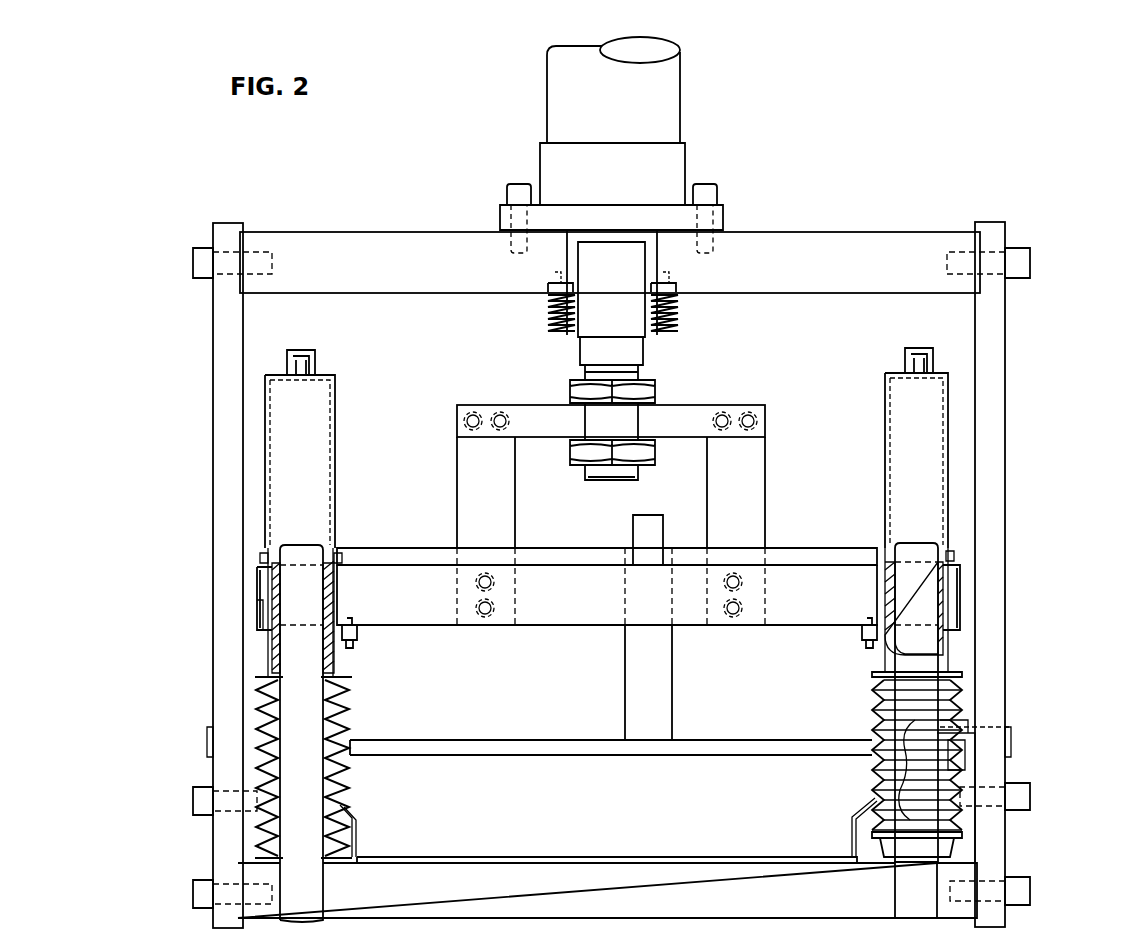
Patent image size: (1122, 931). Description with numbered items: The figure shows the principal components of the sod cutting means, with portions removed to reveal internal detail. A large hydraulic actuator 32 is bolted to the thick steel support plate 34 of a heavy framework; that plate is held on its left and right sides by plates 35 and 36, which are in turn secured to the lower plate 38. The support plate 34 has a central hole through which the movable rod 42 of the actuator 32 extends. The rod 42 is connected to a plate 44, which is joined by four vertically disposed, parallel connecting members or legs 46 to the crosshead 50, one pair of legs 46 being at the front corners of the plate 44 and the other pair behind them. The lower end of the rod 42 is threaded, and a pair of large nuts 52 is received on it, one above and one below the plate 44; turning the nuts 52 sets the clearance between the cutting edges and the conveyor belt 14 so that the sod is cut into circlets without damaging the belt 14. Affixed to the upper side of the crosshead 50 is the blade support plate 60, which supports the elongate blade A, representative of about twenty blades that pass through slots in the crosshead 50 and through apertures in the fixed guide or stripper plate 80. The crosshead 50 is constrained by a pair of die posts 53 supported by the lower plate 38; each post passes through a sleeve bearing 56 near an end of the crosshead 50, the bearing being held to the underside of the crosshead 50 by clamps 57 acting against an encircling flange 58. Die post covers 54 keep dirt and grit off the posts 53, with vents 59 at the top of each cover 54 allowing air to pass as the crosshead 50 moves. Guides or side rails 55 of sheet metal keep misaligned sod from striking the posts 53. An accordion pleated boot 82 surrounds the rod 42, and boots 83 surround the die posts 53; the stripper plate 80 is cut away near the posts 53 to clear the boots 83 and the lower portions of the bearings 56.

The conveyor belt 14 is at (447, 858).
The hydraulic actuator 32 is at (680, 91).
The support plate 34 is at (846, 242).
The side plate 35 is at (213, 320).
The side plate 36 is at (1005, 320).
The lower plate 38 is at (527, 858).
The movable rod 42 is at (580, 350).
The plate 44 is at (560, 402).
The connecting members or legs 46 is at (457, 490).
The crosshead 50 is at (552, 628).
The nuts 52 is at (655, 455).
The die posts 53 is at (940, 546).
The die post covers 54 is at (265, 430).
The guides or side rails 55 is at (852, 818).
The sleeve bearing 56 is at (262, 602).
The clamps 57 is at (360, 638).
The flange 58 is at (260, 631).
The vents 59 is at (306, 364).
The blade support plate 60 is at (828, 546).
The stripper plate (fixed guide plate) 80 is at (768, 740).
The accordion pleated boot 82 is at (674, 328).
The boots 83 is at (350, 722).
The blade A is at (676, 678).